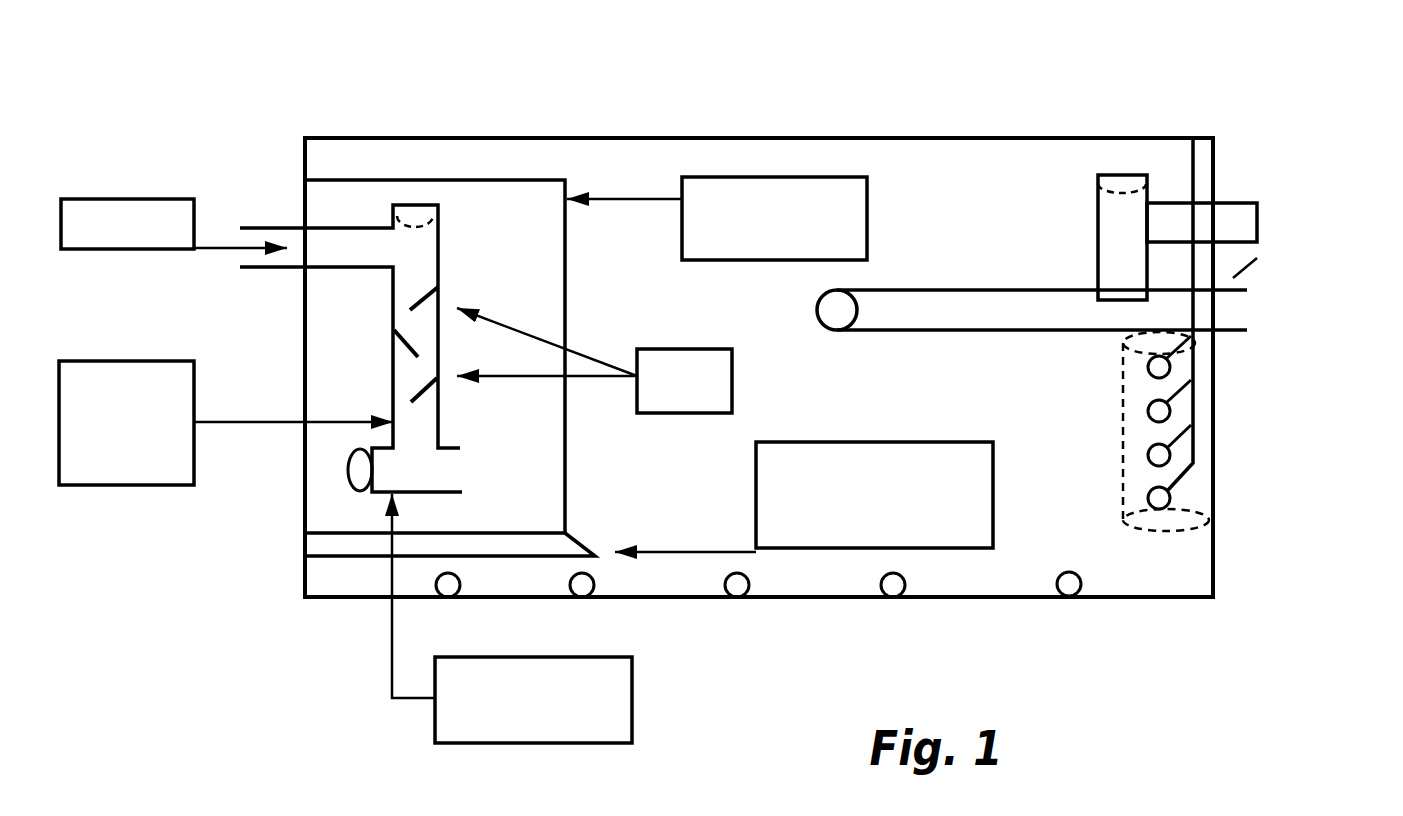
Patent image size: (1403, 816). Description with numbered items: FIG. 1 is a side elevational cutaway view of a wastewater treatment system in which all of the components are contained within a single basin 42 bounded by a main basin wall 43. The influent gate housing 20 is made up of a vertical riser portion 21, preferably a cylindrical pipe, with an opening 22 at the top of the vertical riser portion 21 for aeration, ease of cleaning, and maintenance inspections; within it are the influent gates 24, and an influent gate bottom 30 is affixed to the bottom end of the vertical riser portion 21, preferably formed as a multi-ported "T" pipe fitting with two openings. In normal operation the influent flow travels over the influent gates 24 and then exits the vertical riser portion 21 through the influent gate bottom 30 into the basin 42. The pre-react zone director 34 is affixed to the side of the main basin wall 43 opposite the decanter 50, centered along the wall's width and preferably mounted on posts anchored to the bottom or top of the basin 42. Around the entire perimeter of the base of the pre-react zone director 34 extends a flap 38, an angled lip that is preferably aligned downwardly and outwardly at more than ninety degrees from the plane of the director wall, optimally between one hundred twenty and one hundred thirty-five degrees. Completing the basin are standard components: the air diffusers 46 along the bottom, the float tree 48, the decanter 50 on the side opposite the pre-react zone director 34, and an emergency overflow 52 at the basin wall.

The influent gate housing 20 is at (143, 485).
The vertical riser portion 21 is at (393, 357).
The opening 22 is at (413, 205).
The influent gates 24 is at (672, 349).
The influent gate bottom 30 is at (632, 702).
The pre-react zone director 34 is at (868, 210).
The flap 38 is at (933, 442).
The basin 42 is at (833, 597).
The main basin wall 43 is at (305, 167).
The air diffusers 46 is at (1130, 574).
The float tree 48 is at (1240, 422).
The decanter 50 is at (1259, 290).
The emergency overflow 52 is at (1237, 157).